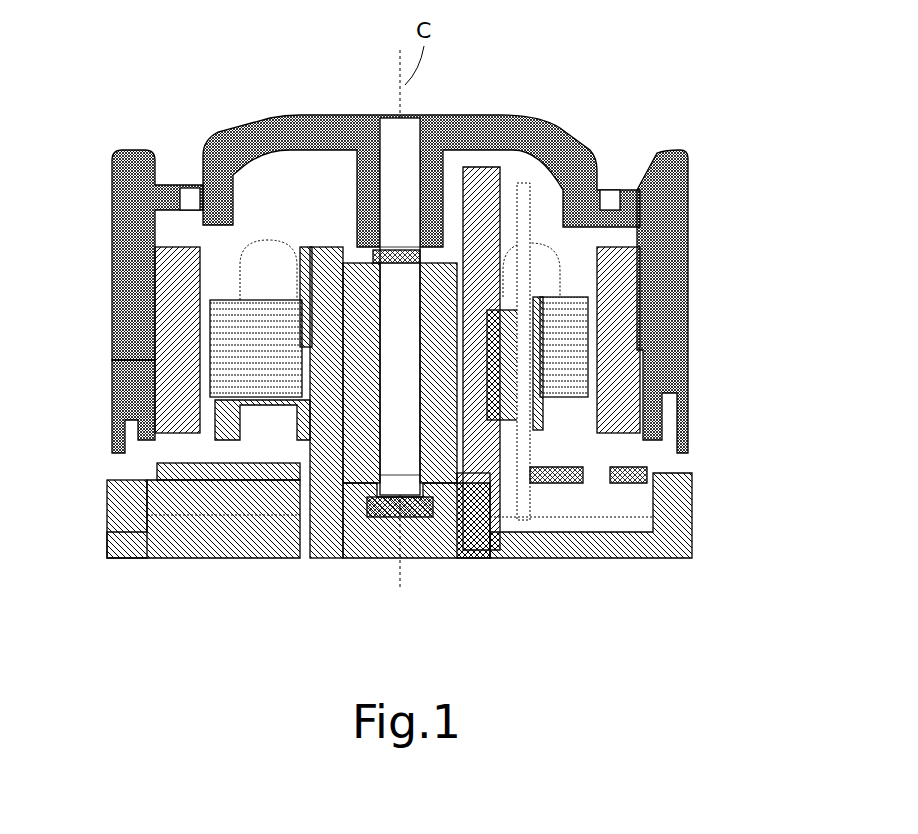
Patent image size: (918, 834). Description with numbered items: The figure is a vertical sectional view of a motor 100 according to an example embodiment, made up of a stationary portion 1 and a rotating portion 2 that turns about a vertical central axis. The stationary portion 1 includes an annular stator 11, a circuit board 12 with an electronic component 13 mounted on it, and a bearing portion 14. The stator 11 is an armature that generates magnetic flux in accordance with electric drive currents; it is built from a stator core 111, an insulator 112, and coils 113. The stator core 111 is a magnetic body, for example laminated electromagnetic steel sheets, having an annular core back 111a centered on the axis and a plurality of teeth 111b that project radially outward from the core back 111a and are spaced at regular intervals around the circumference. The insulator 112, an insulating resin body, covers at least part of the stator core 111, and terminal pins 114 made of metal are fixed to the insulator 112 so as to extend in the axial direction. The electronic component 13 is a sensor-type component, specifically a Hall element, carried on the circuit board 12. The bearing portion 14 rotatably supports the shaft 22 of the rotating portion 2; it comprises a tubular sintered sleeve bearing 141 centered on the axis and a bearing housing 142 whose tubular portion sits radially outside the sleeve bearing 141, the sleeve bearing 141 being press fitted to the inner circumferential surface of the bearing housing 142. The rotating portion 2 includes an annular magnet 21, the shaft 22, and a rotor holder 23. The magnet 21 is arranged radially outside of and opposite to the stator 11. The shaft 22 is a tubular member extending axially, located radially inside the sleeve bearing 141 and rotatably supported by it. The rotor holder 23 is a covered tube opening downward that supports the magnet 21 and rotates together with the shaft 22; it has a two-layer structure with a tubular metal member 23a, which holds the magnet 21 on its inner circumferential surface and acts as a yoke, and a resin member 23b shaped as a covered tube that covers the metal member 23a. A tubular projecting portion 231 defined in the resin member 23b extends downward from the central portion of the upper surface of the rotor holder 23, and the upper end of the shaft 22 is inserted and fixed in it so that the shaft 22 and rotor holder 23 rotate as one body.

The motor 100 is at (612, 78).
The stationary portion 1 is at (399, 448).
The annular stator 11 is at (416, 390).
The stator core 111 is at (225, 355).
The annular core back 111a is at (520, 392).
The teeth 111b is at (575, 350).
The insulator 112 is at (126, 285).
The coils 113 is at (240, 260).
The terminal pin 114 is at (520, 237).
The circuit board 12 is at (210, 483).
The electronic component 13 is at (570, 468).
The bearing portion 14 is at (405, 442).
The sleeve bearing 141 is at (487, 540).
The bearing housing 142 is at (445, 530).
The rotating portion 2 is at (400, 247).
The magnet 21 is at (660, 340).
The shaft 22 is at (418, 152).
The rotor holder 23 is at (421, 144).
The tubular metal member 23a is at (210, 296).
The resin member 23b is at (250, 132).
The tubular projecting portion 231 is at (352, 118).